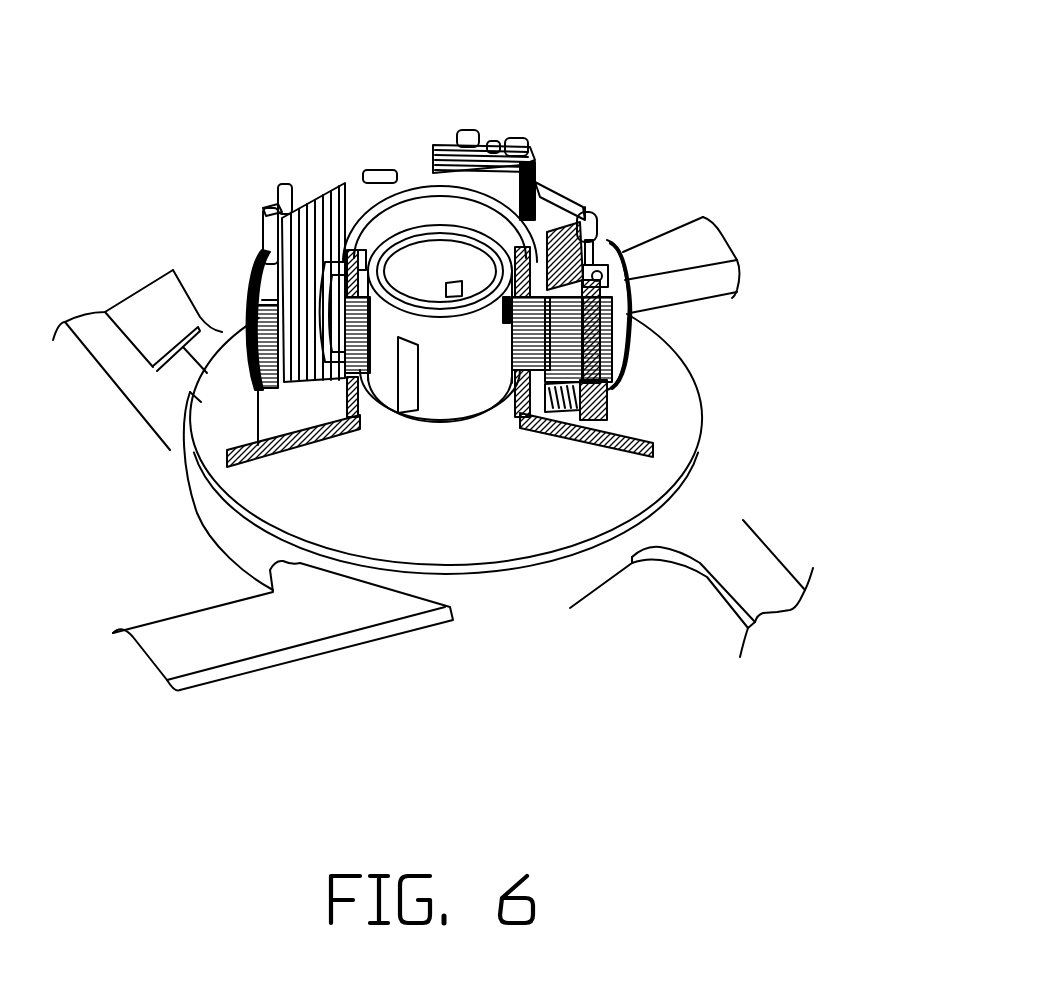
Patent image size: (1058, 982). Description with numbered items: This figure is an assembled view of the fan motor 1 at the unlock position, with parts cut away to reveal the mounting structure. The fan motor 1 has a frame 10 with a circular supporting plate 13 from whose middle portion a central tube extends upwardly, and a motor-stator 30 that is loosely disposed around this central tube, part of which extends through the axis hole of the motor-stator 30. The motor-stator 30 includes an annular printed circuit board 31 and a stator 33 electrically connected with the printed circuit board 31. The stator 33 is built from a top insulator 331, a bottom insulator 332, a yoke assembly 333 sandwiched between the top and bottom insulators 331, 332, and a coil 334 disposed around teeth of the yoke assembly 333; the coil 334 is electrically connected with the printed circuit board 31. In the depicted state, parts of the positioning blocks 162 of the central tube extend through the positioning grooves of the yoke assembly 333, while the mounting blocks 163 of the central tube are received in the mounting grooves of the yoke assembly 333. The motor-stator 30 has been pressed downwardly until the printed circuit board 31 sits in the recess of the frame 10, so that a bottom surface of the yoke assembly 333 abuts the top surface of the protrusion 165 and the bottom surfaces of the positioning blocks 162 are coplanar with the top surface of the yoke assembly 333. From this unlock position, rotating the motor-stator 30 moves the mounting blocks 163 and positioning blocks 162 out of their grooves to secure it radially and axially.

The fan motor 1 is at (500, 59).
The frame 10 is at (186, 491).
The supporting plate 13 is at (293, 510).
The motor-stator 30 is at (238, 312).
The printed circuit board 31 is at (635, 420).
The stator 33 is at (734, 295).
The top insulator 331 is at (625, 286).
The bottom insulator 332 is at (693, 388).
The yoke assembly 333 is at (615, 318).
The coil 334 is at (613, 224).
The positioning blocks 162 is at (364, 254).
The mounting blocks 163 is at (410, 390).
The protrusion 165 is at (447, 420).